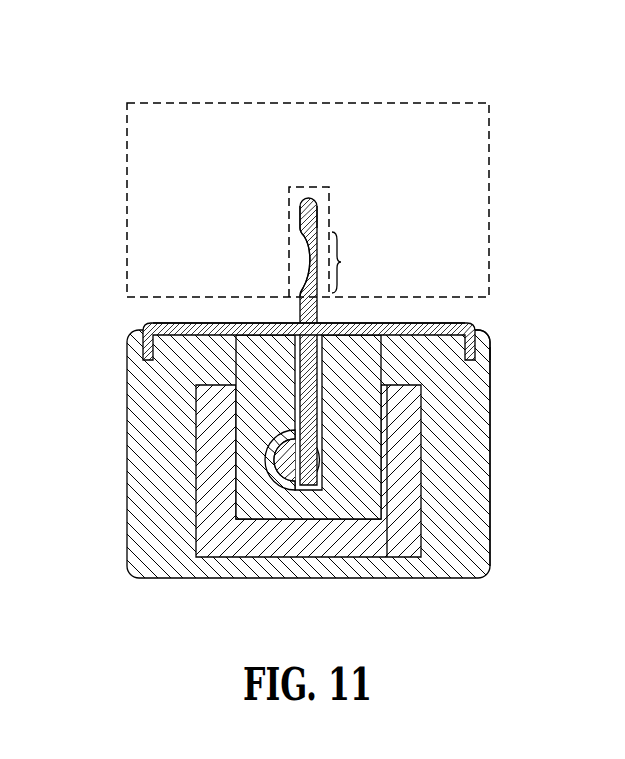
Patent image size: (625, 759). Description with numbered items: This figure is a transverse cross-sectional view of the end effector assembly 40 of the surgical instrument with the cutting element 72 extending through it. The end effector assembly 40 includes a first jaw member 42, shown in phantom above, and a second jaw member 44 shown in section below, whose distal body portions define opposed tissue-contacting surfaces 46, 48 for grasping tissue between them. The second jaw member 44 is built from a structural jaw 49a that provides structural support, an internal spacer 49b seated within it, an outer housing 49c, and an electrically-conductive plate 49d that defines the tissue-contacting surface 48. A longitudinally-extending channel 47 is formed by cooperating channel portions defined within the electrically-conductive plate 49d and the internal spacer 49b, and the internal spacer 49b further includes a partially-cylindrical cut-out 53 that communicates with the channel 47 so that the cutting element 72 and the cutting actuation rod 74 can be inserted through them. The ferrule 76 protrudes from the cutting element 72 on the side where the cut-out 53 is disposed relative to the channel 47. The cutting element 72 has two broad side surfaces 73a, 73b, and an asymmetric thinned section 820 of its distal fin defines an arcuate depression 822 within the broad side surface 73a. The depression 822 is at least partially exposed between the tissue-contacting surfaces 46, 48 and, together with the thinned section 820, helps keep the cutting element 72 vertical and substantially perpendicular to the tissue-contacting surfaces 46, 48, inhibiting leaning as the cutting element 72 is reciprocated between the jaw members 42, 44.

The end effector assembly 40 is at (132, 69).
The first jaw member 42 is at (458, 102).
The second jaw member 44 is at (105, 548).
The tissue-contacting surface 46 is at (492, 304).
The channel 47 is at (321, 396).
The tissue-contacting surface 48 is at (455, 316).
The structural jaw 49a is at (380, 543).
The internal spacer 49b is at (348, 443).
The outer housing 49c is at (188, 324).
The electrically-conductive plate 49d is at (462, 521).
The partially-cylindrical cut-out 53 is at (272, 468).
The cutting element 72 is at (299, 400).
The broad side surface 73a is at (292, 218).
The broad side surface 73b is at (325, 218).
The cutting actuation rod 74 is at (277, 445).
The ferrule 76 is at (284, 460).
The asymmetric thinned section 820 is at (342, 262).
The depression 822 is at (311, 272).